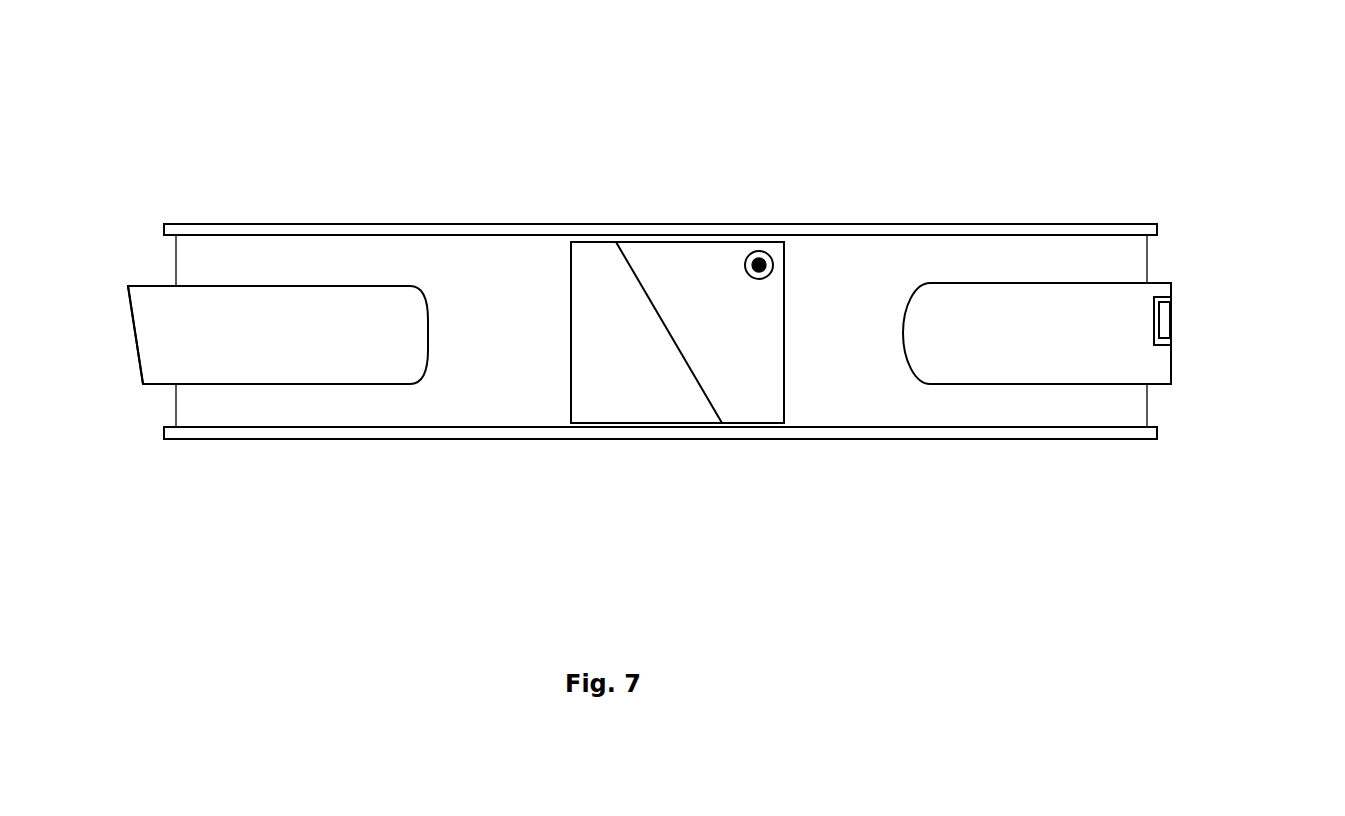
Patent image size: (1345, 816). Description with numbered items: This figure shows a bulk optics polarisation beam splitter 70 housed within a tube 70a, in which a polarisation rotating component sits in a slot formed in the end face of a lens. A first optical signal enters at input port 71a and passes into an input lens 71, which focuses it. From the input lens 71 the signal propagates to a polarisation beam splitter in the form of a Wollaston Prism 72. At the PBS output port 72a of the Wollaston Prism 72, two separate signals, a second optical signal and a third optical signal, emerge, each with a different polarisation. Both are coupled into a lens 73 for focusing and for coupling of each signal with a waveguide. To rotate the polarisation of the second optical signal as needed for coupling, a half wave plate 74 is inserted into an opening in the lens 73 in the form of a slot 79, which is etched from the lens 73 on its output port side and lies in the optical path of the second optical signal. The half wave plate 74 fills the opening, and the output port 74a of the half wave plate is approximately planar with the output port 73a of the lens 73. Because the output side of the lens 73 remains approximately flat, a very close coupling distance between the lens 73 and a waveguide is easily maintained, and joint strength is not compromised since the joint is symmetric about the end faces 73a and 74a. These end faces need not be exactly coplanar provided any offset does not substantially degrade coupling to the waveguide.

The polarisation beam splitter 70 is at (200, 223).
The tube 70a is at (345, 433).
The input lens 71 is at (328, 297).
The input port 71a is at (140, 357).
The Wollaston Prism 72 is at (717, 262).
The PBS output port 72a is at (785, 276).
The lens 73 is at (1071, 372).
The output port 73a is at (1172, 370).
The half wave plate 74 is at (1165, 327).
The output port of the half wave plate 74a is at (1172, 317).
The slot 79 is at (1172, 293).